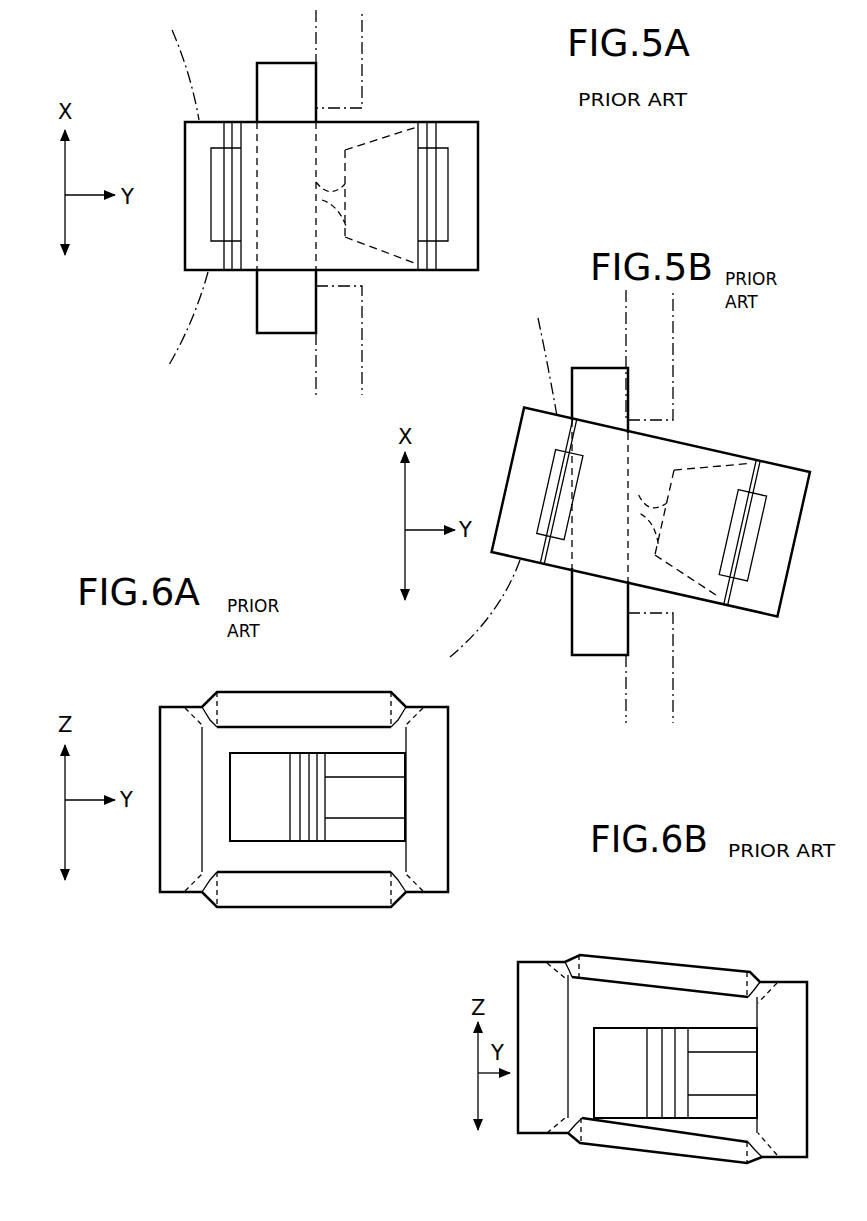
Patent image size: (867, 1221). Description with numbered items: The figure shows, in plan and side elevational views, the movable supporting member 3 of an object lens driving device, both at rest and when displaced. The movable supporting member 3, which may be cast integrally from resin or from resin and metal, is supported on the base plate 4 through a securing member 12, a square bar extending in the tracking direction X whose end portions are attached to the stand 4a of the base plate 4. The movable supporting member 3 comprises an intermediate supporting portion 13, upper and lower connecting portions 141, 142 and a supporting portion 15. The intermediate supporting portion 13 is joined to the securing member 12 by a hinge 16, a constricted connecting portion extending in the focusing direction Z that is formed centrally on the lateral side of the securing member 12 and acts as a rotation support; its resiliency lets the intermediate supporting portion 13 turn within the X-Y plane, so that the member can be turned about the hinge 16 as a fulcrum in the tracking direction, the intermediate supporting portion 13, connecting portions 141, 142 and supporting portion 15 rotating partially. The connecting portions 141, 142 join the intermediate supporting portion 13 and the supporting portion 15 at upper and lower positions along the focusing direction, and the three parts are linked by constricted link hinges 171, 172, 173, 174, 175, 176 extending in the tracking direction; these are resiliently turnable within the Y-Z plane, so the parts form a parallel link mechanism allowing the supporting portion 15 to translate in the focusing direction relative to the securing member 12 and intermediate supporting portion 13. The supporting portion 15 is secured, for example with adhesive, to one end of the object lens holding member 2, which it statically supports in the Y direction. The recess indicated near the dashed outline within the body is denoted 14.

In FIG. 5A, the object lens holding member 2 is at (176, 351).
In FIG. 5B, the object lens holding member 2 is at (472, 637).
In FIG. 5A, the movable supporting member 3 is at (480, 120).
In FIG. 5B, the movable supporting member 3 is at (783, 447).
In FIG. 6A, the movable supporting member 3 is at (462, 705).
In FIG. 6B, the movable supporting member 3 is at (800, 975).
In FIG. 5B, the base plate 4 is at (673, 655).
In FIG. 5A, the stand 4a is at (363, 333).
In FIG. 5A, the securing member 12 is at (290, 80).
In FIG. 5B, the securing member 12 is at (600, 385).
In FIG. 6A, the securing member 12 is at (257, 780).
In FIG. 6B, the securing member 12 is at (620, 1105).
In FIG. 5A, the intermediate supporting portion 13 is at (455, 183).
In FIG. 5B, the intermediate supporting portion 13 is at (765, 547).
In FIG. 6A, the intermediate supporting portion 13 is at (436, 790).
In FIG. 6B, the intermediate supporting portion 13 is at (797, 1087).
In FIG. 5A, the recess 14 is at (355, 135).
In FIG. 5A, the supporting portion 15 is at (197, 183).
In FIG. 5B, the supporting portion 15 is at (522, 485).
In FIG. 6A, the supporting portion 15 is at (168, 852).
In FIG. 6B, the supporting portion 15 is at (527, 988).
In FIG. 5A, the hinge 16 is at (346, 226).
In FIG. 5B, the hinge 16 is at (640, 500).
In FIG. 6A, the hinge 16 is at (308, 768).
In FIG. 6B, the hinge 16 is at (670, 1108).
In FIG. 5B, the connecting portion 141 is at (688, 458).
In FIG. 6A, the connecting portion 141 is at (327, 712).
In FIG. 6B, the connecting portion 141 is at (660, 975).
In FIG. 6A, the connecting portion 142 is at (330, 898).
In FIG. 6B, the connecting portion 142 is at (682, 1145).
In FIG. 5A, the link hinge 171 is at (230, 243).
In FIG. 6A, the link hinge 171 is at (203, 705).
In FIG. 6B, the link hinge 171 is at (567, 962).
In FIG. 5A, the link hinge 172 is at (437, 262).
In FIG. 6A, the link hinge 172 is at (405, 705).
In FIG. 6B, the link hinge 172 is at (760, 978).
In FIG. 5A, the link hinge 173 is at (226, 140).
In FIG. 5A, the link hinge 174 is at (437, 137).
In FIG. 6A, the link hinge 175 is at (205, 895).
In FIG. 6B, the link hinge 175 is at (565, 1140).
In FIG. 6A, the link hinge 176 is at (410, 895).
In FIG. 6B, the link hinge 176 is at (762, 1158).